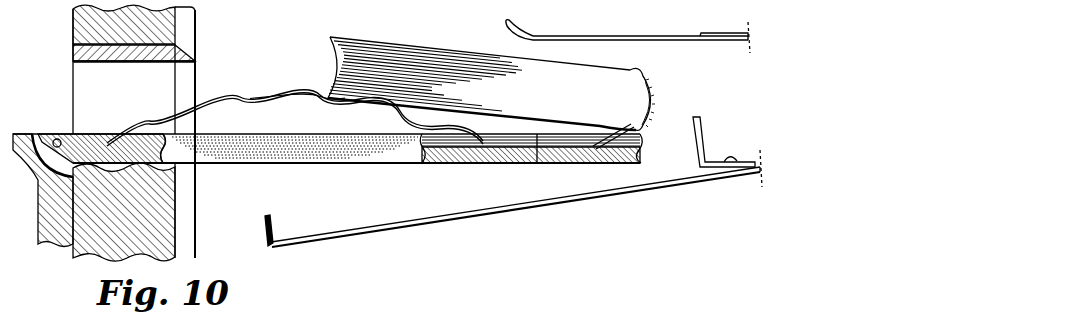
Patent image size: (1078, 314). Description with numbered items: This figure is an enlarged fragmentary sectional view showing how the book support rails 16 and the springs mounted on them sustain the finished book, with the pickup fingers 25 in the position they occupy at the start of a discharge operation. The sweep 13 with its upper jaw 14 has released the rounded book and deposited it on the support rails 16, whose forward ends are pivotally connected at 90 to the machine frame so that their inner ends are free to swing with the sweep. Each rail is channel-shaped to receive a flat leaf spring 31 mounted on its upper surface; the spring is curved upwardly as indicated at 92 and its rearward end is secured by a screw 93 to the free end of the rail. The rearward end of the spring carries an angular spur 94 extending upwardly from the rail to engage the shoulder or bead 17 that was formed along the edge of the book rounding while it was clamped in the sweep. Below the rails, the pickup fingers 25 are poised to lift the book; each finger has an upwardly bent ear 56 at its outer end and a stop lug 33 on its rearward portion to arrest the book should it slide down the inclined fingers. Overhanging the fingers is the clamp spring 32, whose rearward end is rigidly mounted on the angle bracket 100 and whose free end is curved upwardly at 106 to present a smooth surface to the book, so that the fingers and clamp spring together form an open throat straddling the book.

The sweep 13 is at (148, 220).
The upper jaw 14 is at (83, 24).
The support rails 16 is at (247, 155).
The back shoulder 17 is at (645, 77).
The pickup fingers 25 is at (440, 222).
The flat leaf springs 31 is at (248, 96).
The clamp spring 32 is at (595, 35).
The stop lugs 33 is at (703, 136).
The upwardly bent ear 56 is at (274, 230).
The pivotal connection 90 is at (57, 139).
The upward curve of spring 92 is at (290, 95).
The screw 93 is at (543, 143).
The angular spur 94 is at (642, 147).
The angle bracket 100 is at (721, 33).
The upwardly curved free end 106 is at (515, 25).